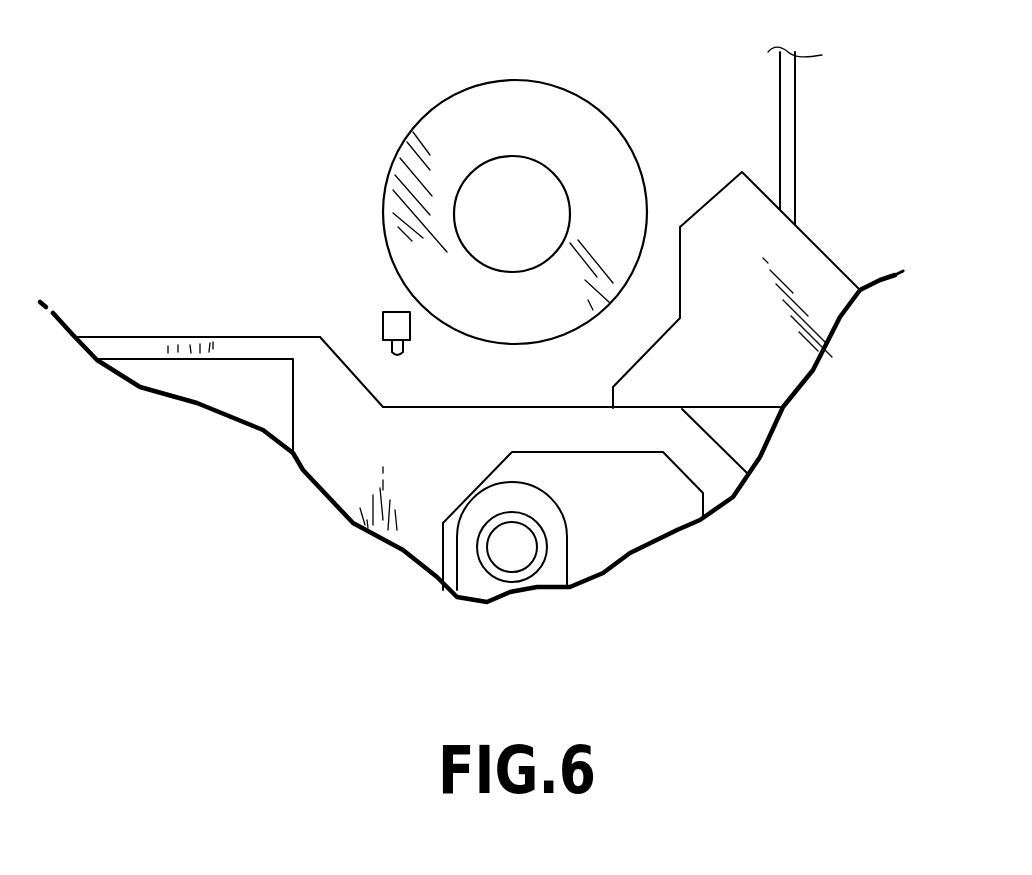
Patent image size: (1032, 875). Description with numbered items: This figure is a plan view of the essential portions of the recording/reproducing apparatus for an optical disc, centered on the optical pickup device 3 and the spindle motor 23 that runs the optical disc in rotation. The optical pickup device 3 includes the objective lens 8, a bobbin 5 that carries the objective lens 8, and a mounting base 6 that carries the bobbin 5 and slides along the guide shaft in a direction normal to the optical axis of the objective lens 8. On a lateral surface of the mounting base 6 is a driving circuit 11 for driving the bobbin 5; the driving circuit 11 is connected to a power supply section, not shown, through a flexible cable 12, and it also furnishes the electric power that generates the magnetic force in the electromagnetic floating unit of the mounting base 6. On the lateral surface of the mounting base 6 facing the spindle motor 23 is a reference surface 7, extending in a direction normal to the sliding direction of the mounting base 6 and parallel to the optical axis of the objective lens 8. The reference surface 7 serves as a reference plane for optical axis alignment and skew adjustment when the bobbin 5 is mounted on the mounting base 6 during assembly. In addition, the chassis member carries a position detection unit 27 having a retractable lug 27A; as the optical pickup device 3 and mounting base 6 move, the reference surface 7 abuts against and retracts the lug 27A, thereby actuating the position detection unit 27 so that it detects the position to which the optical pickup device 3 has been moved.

The optical pickup device 3 is at (232, 313).
The bobbin 5 is at (602, 470).
The mounting base 6 is at (140, 342).
The reference surface 7 is at (493, 407).
The objective lens 8 is at (525, 552).
The driving circuit 11 is at (800, 252).
The flexible cable 12 is at (785, 112).
The spindle motor 23 is at (600, 108).
The position detection unit 27 is at (383, 323).
The retractable lug 27A is at (392, 352).